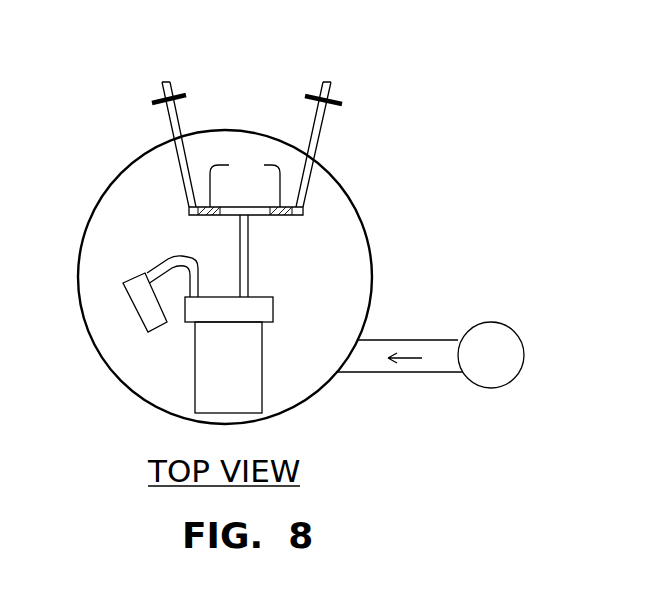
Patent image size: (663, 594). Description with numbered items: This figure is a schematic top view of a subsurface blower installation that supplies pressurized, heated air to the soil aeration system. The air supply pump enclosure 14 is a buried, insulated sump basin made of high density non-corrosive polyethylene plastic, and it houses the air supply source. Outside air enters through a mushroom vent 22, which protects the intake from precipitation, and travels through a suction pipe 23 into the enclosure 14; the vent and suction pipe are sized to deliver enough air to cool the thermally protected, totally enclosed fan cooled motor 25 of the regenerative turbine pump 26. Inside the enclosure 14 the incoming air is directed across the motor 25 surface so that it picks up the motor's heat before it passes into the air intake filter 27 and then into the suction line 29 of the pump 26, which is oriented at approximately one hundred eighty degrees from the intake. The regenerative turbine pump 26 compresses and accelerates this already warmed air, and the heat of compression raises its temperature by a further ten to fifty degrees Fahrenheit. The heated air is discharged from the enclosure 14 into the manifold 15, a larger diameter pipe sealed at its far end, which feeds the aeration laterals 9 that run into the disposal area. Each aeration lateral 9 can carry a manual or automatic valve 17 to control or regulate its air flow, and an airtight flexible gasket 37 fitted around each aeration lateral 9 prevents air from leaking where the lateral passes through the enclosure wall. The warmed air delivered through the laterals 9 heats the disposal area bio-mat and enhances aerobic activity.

The aeration lateral 9 is at (172, 127).
The air supply pump enclosure 14 is at (113, 182).
The manifold 15 is at (248, 285).
The air control mechanism manual or automatic valve 17 is at (229, 165).
The mushroom vent 22 is at (490, 322).
The suction pipe 23 is at (398, 340).
The motor 25 is at (262, 395).
The regenerative turbine pump 26 is at (273, 312).
The air intake filter 27 is at (160, 331).
The suction line 29 is at (157, 265).
The gasket 37 is at (155, 97).